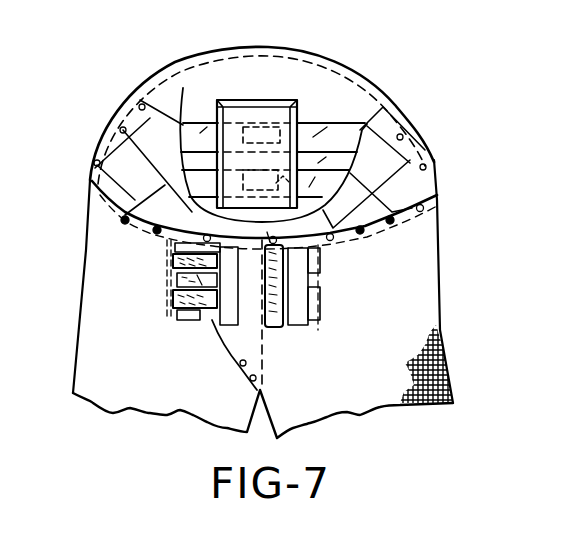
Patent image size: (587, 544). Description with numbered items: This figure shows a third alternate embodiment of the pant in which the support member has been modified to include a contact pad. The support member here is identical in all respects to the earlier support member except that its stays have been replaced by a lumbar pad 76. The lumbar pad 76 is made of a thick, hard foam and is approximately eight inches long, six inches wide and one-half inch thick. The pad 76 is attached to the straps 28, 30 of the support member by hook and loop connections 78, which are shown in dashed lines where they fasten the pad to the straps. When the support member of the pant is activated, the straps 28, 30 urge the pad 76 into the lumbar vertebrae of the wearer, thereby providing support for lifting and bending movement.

The strap 28 is at (185, 95).
The strap 30 is at (190, 184).
The lumbar pad 76 is at (268, 98).
The hook and loop connections 78 is at (302, 126).